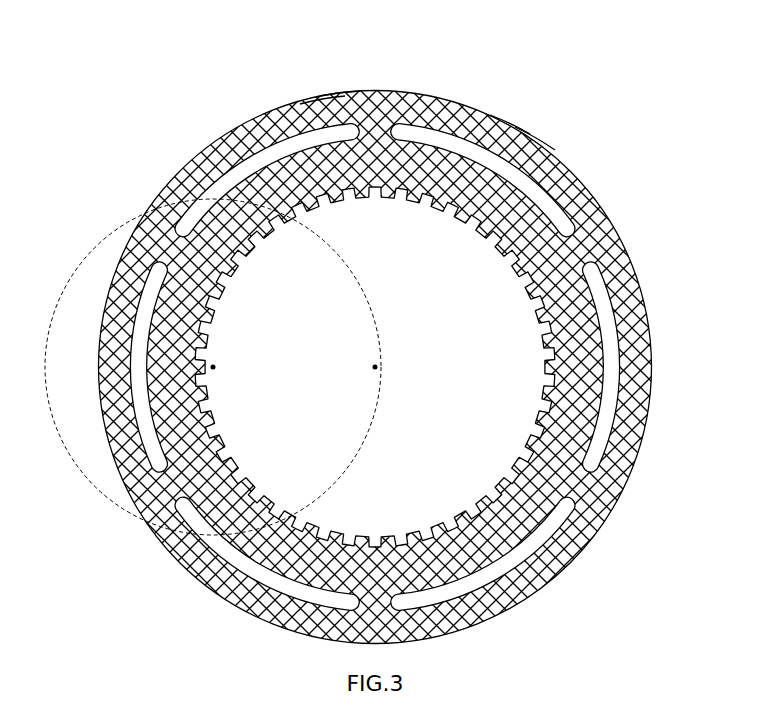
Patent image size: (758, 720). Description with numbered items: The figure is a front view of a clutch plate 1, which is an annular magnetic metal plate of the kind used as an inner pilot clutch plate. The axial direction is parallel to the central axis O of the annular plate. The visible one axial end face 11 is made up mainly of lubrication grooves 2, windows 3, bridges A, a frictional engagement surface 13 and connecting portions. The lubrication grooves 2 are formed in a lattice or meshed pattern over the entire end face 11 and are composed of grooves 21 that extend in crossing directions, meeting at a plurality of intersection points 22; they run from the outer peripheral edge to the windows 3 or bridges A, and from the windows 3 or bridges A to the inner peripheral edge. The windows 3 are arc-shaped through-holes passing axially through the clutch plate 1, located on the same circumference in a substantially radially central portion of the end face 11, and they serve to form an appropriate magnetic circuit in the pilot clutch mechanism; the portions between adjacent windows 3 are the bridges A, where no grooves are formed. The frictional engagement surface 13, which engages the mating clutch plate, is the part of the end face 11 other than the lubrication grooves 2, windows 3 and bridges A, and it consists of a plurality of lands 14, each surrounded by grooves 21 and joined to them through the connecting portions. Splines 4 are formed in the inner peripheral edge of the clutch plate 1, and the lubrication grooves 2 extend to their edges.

The clutch plate 1 is at (643, 70).
The lubrication grooves 2 is at (380, 93).
The windows 3 is at (435, 95).
The splines 4 is at (265, 153).
The one axial end face 11 is at (463, 105).
The frictional engagement surface 13 is at (508, 127).
The lands 14 is at (535, 142).
The grooves 21 is at (338, 95).
The intersection points 22 is at (323, 97).
The bridges A is at (585, 249).
The central axis O is at (386, 375).